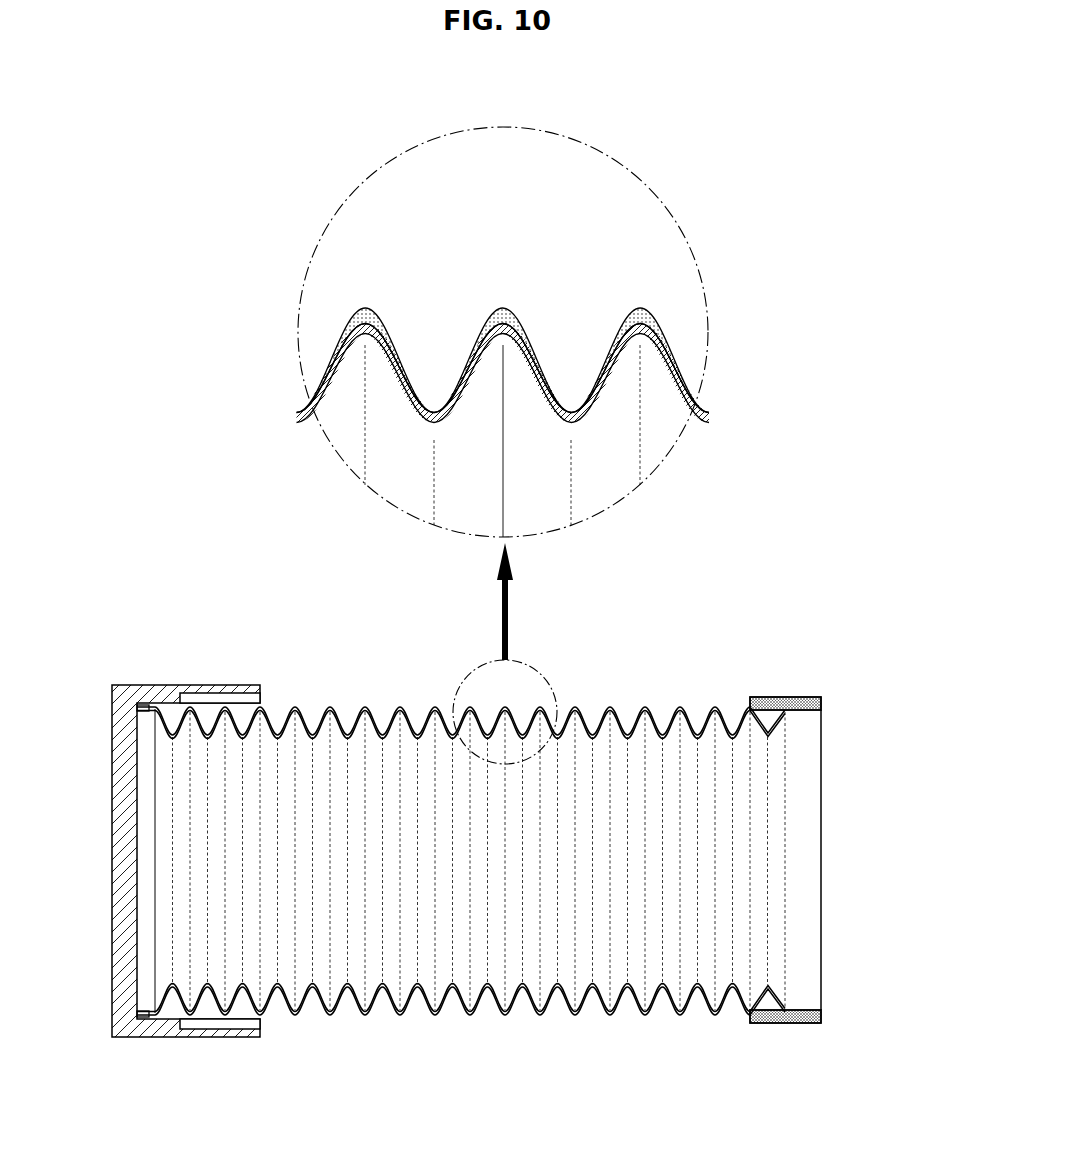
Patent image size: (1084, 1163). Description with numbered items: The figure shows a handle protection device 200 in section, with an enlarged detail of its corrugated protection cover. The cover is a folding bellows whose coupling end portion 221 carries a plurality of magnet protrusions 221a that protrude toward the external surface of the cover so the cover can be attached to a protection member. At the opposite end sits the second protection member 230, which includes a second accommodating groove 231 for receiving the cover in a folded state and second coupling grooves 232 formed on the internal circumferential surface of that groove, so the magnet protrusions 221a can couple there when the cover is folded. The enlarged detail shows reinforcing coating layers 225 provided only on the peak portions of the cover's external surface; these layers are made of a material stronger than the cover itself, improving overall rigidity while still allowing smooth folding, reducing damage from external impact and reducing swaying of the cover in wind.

The handle protection device 200 is at (746, 630).
The coupling end portion 221 is at (830, 698).
The magnet protrusions 221a is at (785, 696).
The reinforcing coating layers 225 is at (501, 306).
The second protection member 230 is at (134, 678).
The second accommodating groove 231 is at (172, 1010).
The second coupling grooves 232 is at (240, 701).